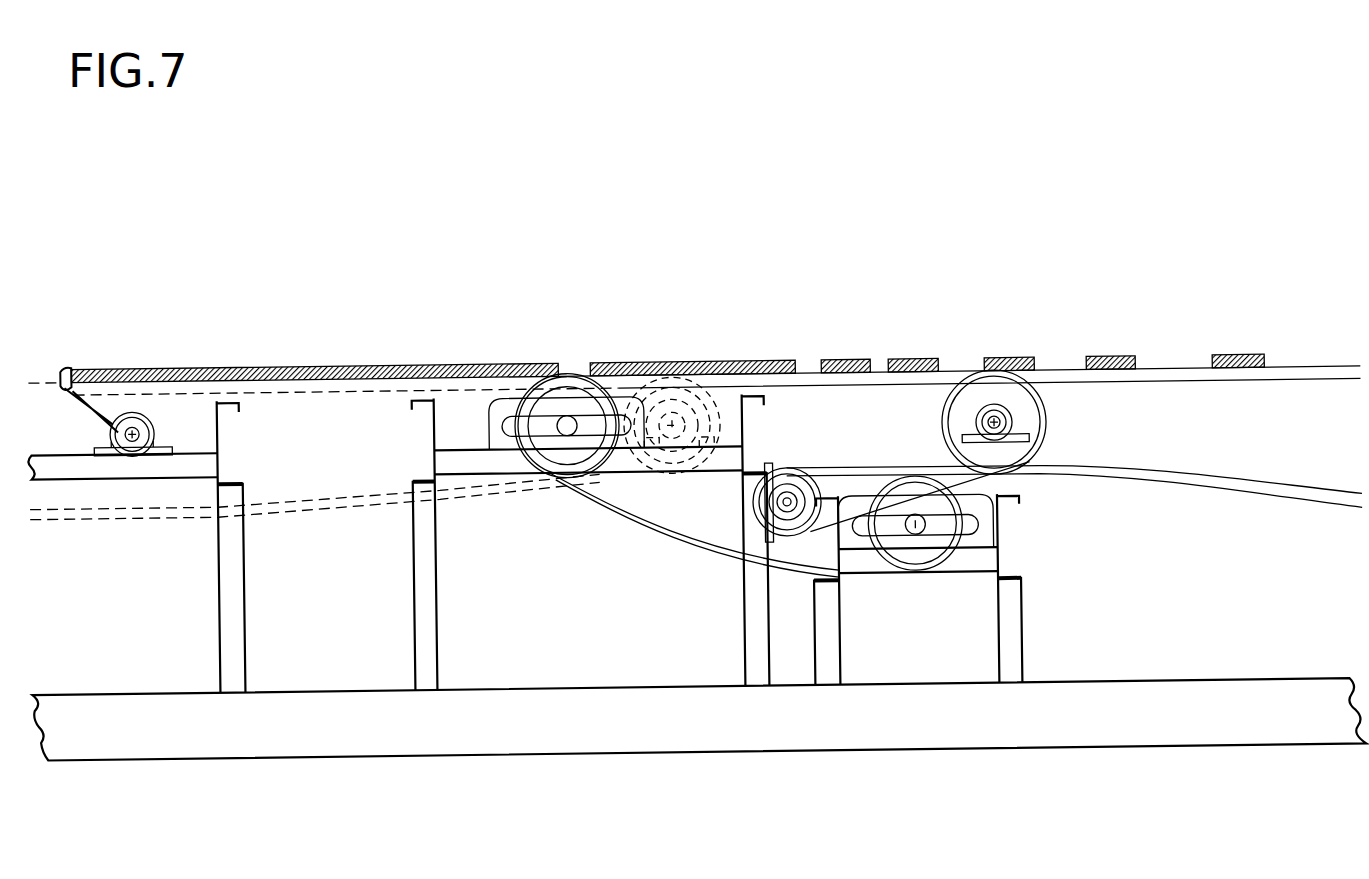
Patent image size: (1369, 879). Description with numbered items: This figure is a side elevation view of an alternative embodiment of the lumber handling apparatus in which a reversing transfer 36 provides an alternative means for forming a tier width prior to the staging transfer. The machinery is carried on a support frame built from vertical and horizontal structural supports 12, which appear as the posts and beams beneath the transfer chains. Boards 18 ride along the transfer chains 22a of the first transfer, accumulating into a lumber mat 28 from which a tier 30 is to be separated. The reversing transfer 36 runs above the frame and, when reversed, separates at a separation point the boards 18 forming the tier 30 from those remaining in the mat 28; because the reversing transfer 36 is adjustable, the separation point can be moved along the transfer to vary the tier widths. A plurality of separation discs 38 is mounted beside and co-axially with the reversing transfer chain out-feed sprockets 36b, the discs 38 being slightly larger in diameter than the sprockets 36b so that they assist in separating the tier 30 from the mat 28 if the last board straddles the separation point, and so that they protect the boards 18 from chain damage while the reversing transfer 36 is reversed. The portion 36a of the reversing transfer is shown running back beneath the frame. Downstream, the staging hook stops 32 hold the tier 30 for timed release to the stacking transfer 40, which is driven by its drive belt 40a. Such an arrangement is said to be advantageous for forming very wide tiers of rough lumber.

The structural supports 12 is at (108, 482).
The boards 18 is at (1238, 355).
The transfer chains 22a is at (1210, 485).
The lumber mat 28 is at (732, 367).
The tier 30 is at (307, 366).
The staging hook stops 32 is at (67, 370).
The reversing transfer 36 is at (808, 377).
The belt cable 36a is at (682, 545).
The reversing transfer chain out-feed sprockets 36b is at (511, 367).
The separation discs 38 is at (575, 375).
The stacking transfer 40 is at (43, 385).
The drive belt 40a is at (350, 510).